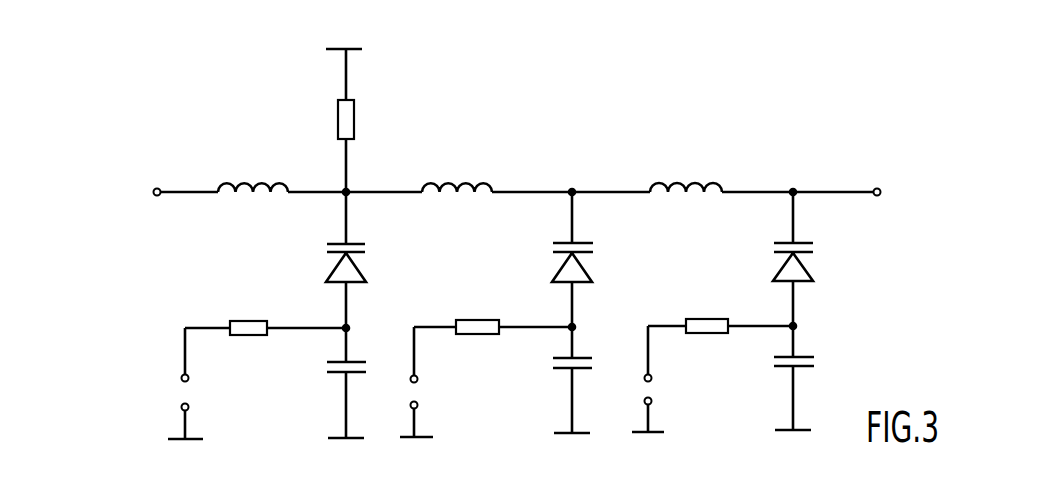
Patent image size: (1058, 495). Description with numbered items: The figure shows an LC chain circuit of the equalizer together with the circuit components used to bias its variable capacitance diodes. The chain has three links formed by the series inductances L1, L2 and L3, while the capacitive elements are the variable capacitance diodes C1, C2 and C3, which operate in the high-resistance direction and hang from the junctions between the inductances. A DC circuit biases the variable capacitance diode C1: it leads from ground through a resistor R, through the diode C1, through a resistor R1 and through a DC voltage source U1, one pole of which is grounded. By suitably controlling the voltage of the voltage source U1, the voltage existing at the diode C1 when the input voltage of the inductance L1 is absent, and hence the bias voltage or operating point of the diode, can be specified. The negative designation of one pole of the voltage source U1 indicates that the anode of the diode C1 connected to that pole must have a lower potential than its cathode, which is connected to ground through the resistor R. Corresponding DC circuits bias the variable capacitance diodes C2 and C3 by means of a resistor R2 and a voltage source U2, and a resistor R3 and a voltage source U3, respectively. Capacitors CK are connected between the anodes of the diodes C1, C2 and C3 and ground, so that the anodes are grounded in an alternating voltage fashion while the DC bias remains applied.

The inductance L1 is at (253, 164).
The inductance L2 is at (457, 165).
The inductance L3 is at (686, 165).
The resistor R is at (351, 120).
The variable capacitance diode C1 is at (366, 260).
The variable capacitance diode C2 is at (591, 259).
The variable capacitance diode C3 is at (813, 259).
The resistor R1 is at (265, 307).
The resistor R2 is at (493, 307).
The resistor R3 is at (720, 306).
The capacitor CK is at (551, 382).
The DC voltage source U1 is at (170, 383).
The voltage source U2 is at (433, 382).
The voltage source U3 is at (665, 379).